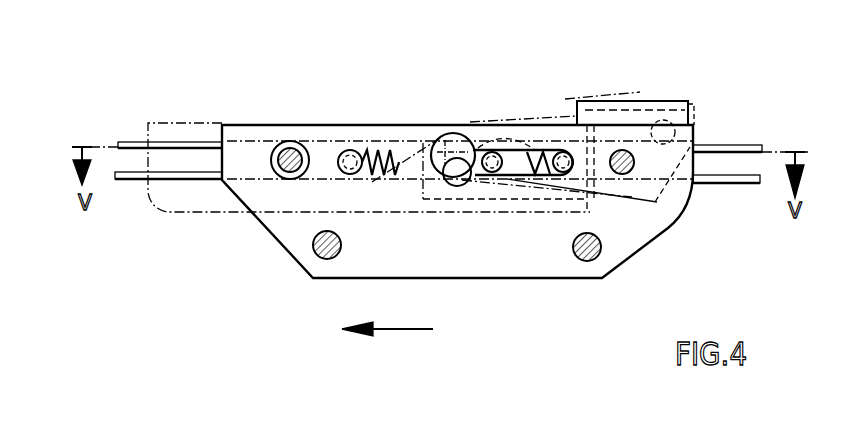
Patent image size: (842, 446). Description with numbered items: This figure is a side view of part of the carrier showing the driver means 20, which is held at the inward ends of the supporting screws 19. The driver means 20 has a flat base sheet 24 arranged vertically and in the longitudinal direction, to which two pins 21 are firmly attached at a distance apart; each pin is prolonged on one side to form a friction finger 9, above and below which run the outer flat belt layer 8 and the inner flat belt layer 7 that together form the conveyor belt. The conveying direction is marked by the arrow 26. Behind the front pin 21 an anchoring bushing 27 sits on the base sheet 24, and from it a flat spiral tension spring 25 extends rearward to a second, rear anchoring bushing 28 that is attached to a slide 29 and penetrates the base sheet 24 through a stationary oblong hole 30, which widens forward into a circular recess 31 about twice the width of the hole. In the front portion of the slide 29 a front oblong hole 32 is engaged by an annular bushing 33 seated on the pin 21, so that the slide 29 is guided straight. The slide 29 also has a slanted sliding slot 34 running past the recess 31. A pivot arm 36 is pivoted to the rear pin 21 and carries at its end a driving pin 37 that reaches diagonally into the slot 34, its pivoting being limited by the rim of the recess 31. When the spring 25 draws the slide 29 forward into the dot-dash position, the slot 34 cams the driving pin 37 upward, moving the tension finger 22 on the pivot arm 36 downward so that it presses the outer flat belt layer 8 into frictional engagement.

The inner flat belt layer 7 is at (727, 185).
The outer flat belt layer 8 is at (732, 145).
The friction finger 9 is at (455, 110).
The pin 21 is at (293, 150).
The supporting screw 19 is at (312, 256).
The driver means 20 is at (521, 300).
The tension finger 22 is at (667, 118).
The base sheet 24 is at (485, 258).
The flat spiral tension spring 25 is at (385, 185).
The conveying direction arrow 26 is at (412, 328).
The anchoring bushing 27 is at (342, 151).
The rear anchoring bushing 28 is at (558, 150).
The slide 29 is at (192, 192).
The oblong hole 30 is at (540, 150).
The circular recess 31 is at (433, 151).
The front oblong hole 32 is at (204, 167).
The annular bushing 33 is at (273, 153).
The sliding slot 34 is at (508, 170).
The pivot arm 36 is at (618, 110).
The driving pin 37 is at (452, 163).